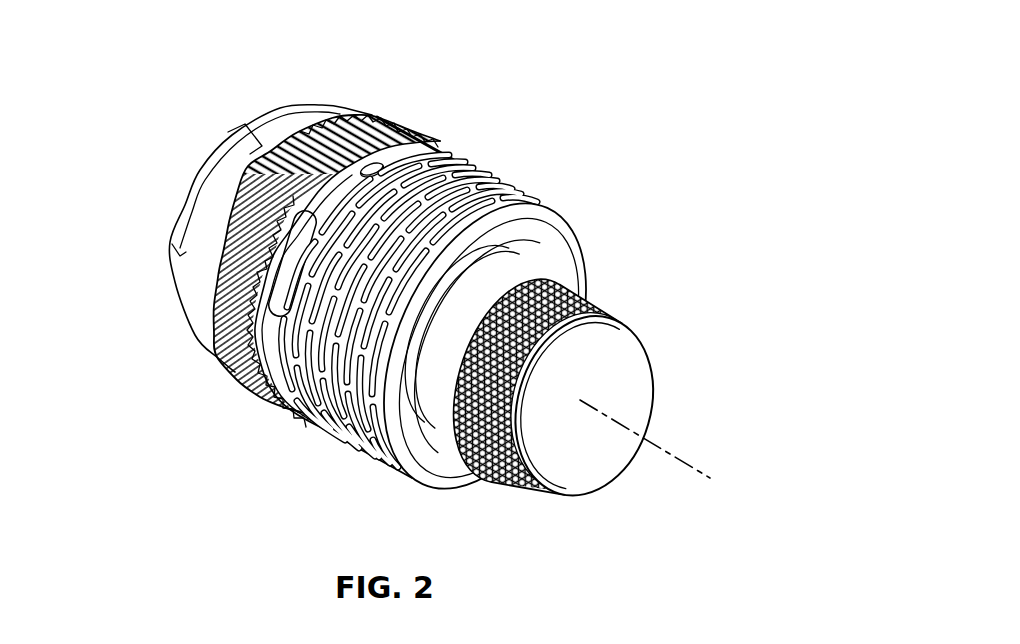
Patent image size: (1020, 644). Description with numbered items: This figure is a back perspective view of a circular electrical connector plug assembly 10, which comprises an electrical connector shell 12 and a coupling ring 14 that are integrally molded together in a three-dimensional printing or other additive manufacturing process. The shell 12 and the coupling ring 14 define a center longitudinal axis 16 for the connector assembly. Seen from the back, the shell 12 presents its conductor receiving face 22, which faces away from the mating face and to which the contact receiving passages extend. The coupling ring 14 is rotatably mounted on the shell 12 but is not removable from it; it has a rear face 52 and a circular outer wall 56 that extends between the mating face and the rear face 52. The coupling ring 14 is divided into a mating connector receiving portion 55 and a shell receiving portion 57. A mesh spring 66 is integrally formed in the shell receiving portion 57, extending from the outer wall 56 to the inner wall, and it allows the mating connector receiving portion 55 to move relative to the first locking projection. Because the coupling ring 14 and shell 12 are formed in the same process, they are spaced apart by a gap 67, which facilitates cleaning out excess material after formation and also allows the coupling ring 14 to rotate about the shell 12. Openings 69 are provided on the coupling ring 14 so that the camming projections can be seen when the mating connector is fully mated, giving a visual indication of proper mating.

The circular electrical connector plug assembly 10 is at (423, 291).
The electrical connector shell 12 is at (150, 238).
The coupling ring 14 is at (578, 216).
The center longitudinal axis 16 is at (677, 457).
The conductor receiving face 22 is at (591, 411).
The rear face 52 is at (584, 255).
The mating connector receiving portion 55 is at (400, 123).
The circular outer wall 56 is at (450, 141).
The shell receiving portion 57 is at (330, 435).
The mesh spring 66 is at (503, 198).
The gap 67 is at (431, 441).
The openings 69 is at (380, 163).